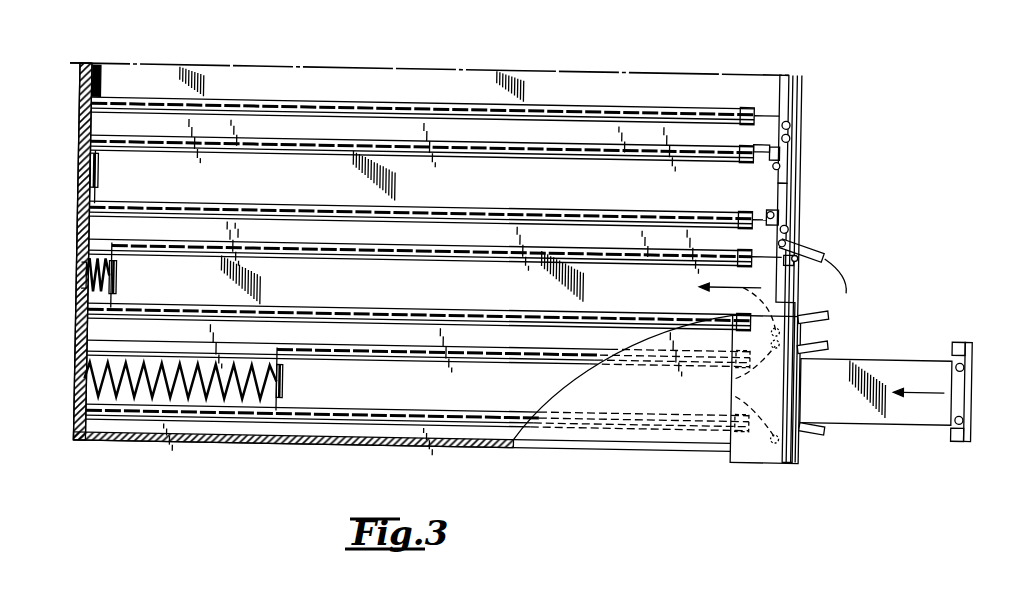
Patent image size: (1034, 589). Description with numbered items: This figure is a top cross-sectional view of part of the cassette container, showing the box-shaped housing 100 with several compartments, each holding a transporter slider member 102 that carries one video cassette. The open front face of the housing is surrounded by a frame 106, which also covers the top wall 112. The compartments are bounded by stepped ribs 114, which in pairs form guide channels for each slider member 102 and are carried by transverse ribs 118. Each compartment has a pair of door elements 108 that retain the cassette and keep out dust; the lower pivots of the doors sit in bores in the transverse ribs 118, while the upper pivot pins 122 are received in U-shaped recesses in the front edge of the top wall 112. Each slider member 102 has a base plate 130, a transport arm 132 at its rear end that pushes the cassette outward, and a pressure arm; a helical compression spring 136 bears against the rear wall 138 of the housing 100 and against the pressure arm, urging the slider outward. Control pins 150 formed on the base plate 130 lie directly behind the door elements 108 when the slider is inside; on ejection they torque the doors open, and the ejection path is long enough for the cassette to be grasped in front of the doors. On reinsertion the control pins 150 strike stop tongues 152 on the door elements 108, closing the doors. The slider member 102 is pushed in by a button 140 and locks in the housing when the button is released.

The housing 100 is at (70, 192).
The transporter slider member 102 is at (428, 95).
The frame 106 is at (757, 462).
The door element 108 is at (790, 74).
The top wall 112 is at (598, 395).
The rib 114 is at (244, 232).
The transverse rib 118 is at (632, 128).
The pivot pin 122 is at (792, 138).
The base plate 130 is at (890, 358).
The transport arm 132 is at (108, 66).
The helical compression spring 136 is at (82, 78).
The rear wall 138 is at (85, 272).
The button 140 is at (805, 84).
The control pin 150 is at (773, 164).
The stop tongue 152 is at (770, 140).